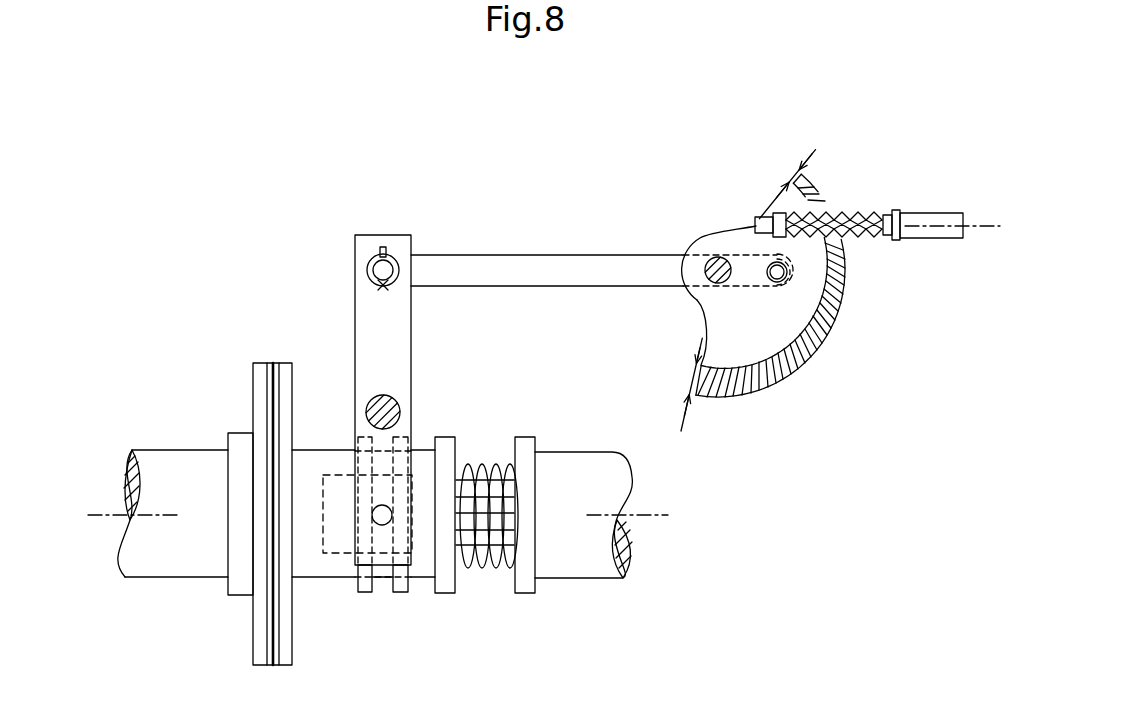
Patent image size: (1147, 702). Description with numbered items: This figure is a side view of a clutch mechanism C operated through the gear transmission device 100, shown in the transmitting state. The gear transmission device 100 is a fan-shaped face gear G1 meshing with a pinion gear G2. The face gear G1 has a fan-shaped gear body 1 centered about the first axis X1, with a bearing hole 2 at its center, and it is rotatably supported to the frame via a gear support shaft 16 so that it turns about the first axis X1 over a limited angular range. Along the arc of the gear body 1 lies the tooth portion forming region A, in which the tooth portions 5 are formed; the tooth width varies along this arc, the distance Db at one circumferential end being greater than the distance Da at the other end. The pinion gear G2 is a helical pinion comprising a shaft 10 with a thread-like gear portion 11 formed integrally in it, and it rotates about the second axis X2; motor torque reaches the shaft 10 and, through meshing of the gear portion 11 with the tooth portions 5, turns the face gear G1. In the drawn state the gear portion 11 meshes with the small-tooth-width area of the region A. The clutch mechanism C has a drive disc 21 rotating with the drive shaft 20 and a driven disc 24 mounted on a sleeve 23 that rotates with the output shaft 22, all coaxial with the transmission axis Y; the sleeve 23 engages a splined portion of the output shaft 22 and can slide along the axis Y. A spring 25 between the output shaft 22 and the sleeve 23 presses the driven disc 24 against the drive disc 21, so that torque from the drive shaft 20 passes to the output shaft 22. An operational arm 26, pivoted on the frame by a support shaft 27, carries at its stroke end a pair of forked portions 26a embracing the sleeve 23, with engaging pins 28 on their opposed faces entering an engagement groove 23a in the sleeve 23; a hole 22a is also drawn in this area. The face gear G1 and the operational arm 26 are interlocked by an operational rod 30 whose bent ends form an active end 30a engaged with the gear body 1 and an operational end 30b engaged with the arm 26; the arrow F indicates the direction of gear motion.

The gear body 1 is at (800, 296).
The bearing hole 2 is at (716, 268).
The tooth portions 5 is at (833, 330).
The shaft 10 is at (933, 213).
The gear portion 11 is at (868, 212).
The gear support shaft 16 is at (715, 273).
The drive shaft 20 is at (190, 462).
The drive disc 21 is at (262, 370).
The output shaft 22 is at (572, 572).
The hole 22a is at (347, 553).
The sleeve 23 is at (322, 453).
The engagement groove 23a is at (382, 580).
The driven disc 24 is at (283, 370).
The spring 25 is at (480, 570).
The operational arm 26 is at (393, 330).
The forked portions 26a is at (412, 545).
The support shaft 27 is at (398, 401).
The engaging pins 28 is at (372, 516).
The operational rod 30 is at (535, 263).
The active end 30a is at (777, 283).
The operational end 30b is at (378, 268).
The gear transmission device 100 is at (840, 128).
The clutch mechanism C is at (217, 375).
The transmission axis Y is at (393, 517).
The first axis X1 is at (668, 253).
The second axis X2 is at (1000, 235).
The face gear G1 is at (710, 210).
The pinion gear G2 is at (858, 250).
The distance Da is at (783, 179).
The distance Db is at (675, 384).
The force direction F is at (818, 378).
The tooth portion forming region A is at (725, 398).